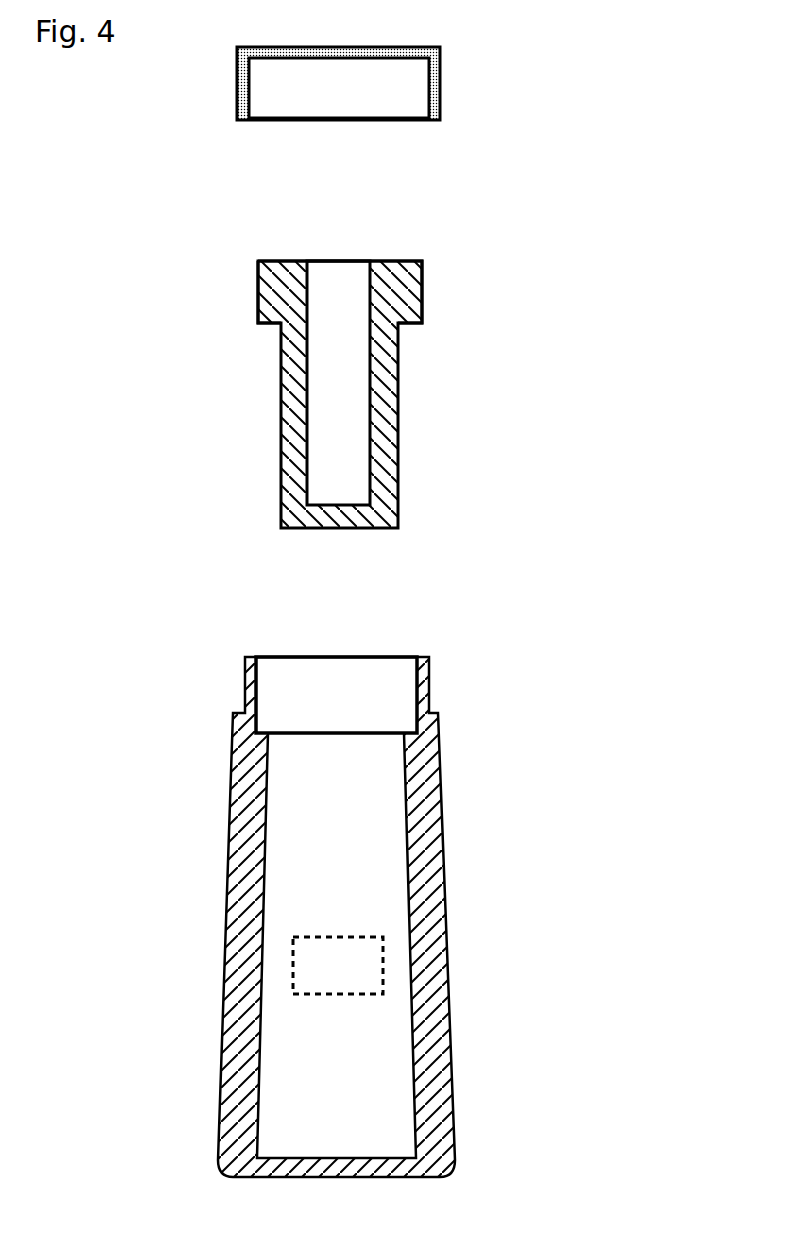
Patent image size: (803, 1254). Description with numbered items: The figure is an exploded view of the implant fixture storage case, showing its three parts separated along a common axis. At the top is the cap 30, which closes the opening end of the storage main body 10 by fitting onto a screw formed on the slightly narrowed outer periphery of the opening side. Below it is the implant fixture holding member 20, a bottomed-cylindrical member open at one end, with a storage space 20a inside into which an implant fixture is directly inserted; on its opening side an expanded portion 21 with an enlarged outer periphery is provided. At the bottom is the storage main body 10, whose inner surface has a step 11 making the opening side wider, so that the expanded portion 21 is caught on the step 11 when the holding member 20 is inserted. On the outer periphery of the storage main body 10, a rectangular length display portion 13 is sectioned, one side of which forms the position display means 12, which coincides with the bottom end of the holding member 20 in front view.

The storage main body 10 is at (311, 890).
The step 11 is at (405, 725).
The position display means 12 is at (343, 937).
The length display portion 13 is at (303, 969).
The implant fixture holding member 20 is at (292, 353).
The storage space 20a is at (337, 250).
The expanded portion 21 is at (258, 283).
The cap 30 is at (237, 82).